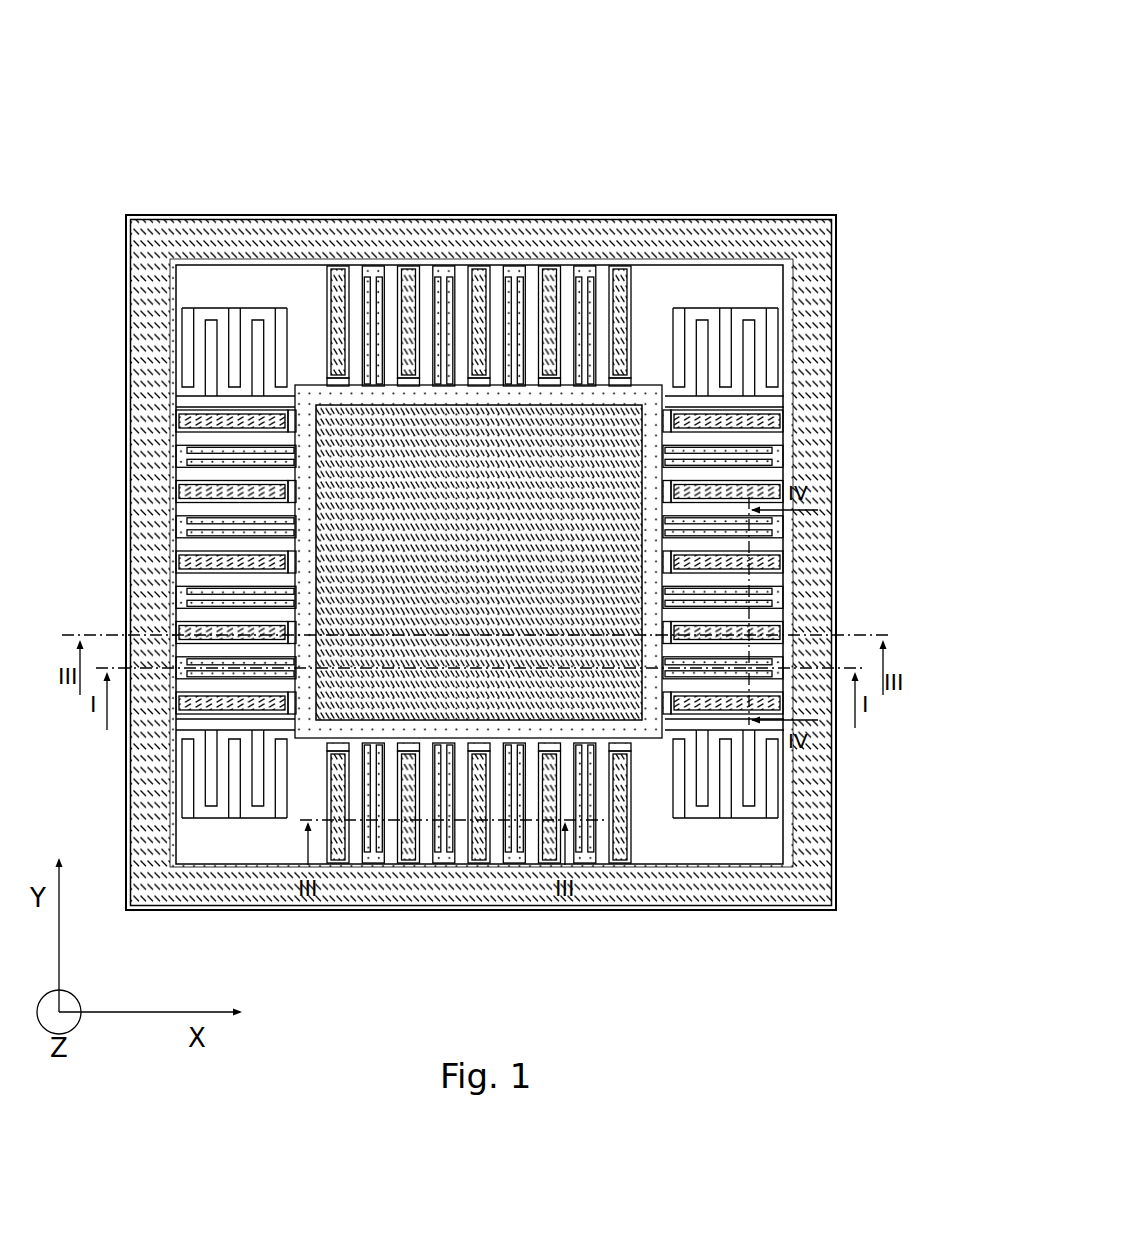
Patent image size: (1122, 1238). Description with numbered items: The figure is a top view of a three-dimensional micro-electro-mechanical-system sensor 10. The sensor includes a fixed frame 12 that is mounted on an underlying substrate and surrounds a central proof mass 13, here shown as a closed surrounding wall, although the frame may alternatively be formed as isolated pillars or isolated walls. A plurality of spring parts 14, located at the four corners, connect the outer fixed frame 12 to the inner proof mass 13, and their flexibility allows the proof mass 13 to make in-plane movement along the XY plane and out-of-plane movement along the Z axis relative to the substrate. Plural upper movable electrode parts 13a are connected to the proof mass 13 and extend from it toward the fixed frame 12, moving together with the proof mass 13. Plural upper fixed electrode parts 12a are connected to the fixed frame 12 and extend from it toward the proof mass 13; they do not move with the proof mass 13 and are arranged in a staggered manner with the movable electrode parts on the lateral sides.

The three-dimensional micro-electro-mechanical-system sensor 10 is at (441, 457).
The fixed frame 12 is at (295, 237).
The upper fixed electrode parts 12a is at (410, 268).
The proof mass 13 is at (613, 432).
The upper movable electrode parts 13a is at (373, 268).
The spring parts 14 is at (732, 300).